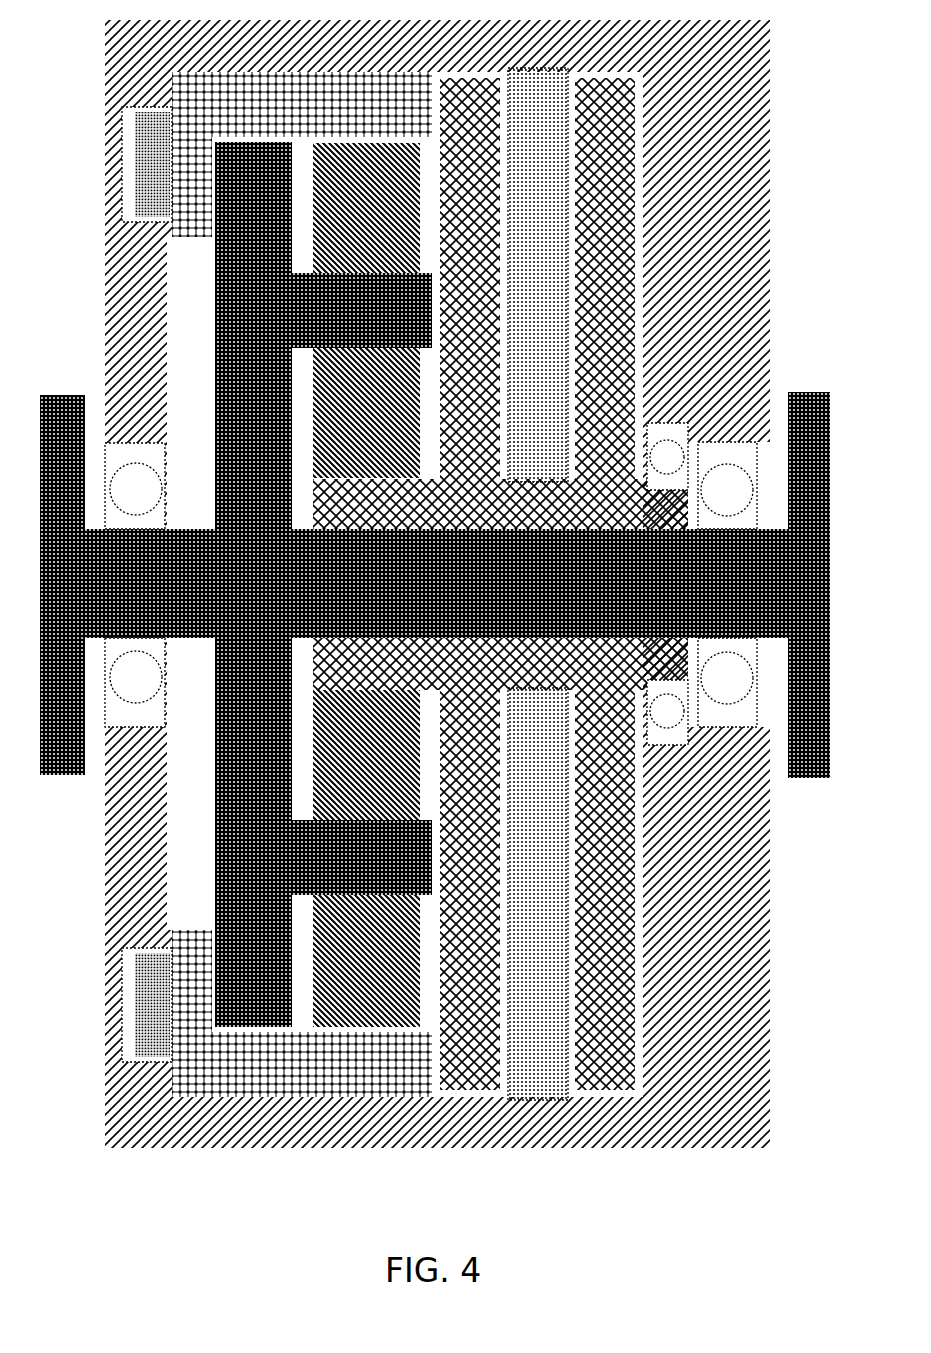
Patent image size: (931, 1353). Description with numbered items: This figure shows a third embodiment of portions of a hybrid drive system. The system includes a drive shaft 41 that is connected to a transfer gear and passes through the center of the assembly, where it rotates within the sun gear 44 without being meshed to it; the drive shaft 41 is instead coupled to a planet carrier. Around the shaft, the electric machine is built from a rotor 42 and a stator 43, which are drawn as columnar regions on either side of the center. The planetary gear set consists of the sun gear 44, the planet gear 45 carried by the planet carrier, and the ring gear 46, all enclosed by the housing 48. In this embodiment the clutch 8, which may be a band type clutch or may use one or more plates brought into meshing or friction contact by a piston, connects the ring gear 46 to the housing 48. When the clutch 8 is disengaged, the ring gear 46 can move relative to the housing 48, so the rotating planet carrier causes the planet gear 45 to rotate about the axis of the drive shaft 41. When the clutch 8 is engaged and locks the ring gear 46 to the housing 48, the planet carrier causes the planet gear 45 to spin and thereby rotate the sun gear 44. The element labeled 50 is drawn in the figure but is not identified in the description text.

The clutch 8 is at (147, 584).
The drive shaft 41 is at (435, 585).
The rotor 42 is at (537, 584).
The stator 43 is at (538, 584).
The sun gear 44 is at (500, 584).
The planet gear 45 is at (366, 585).
The ring gear 46 is at (302, 584).
The housing 48 is at (437, 584).
The rotor 50 is at (323, 584).